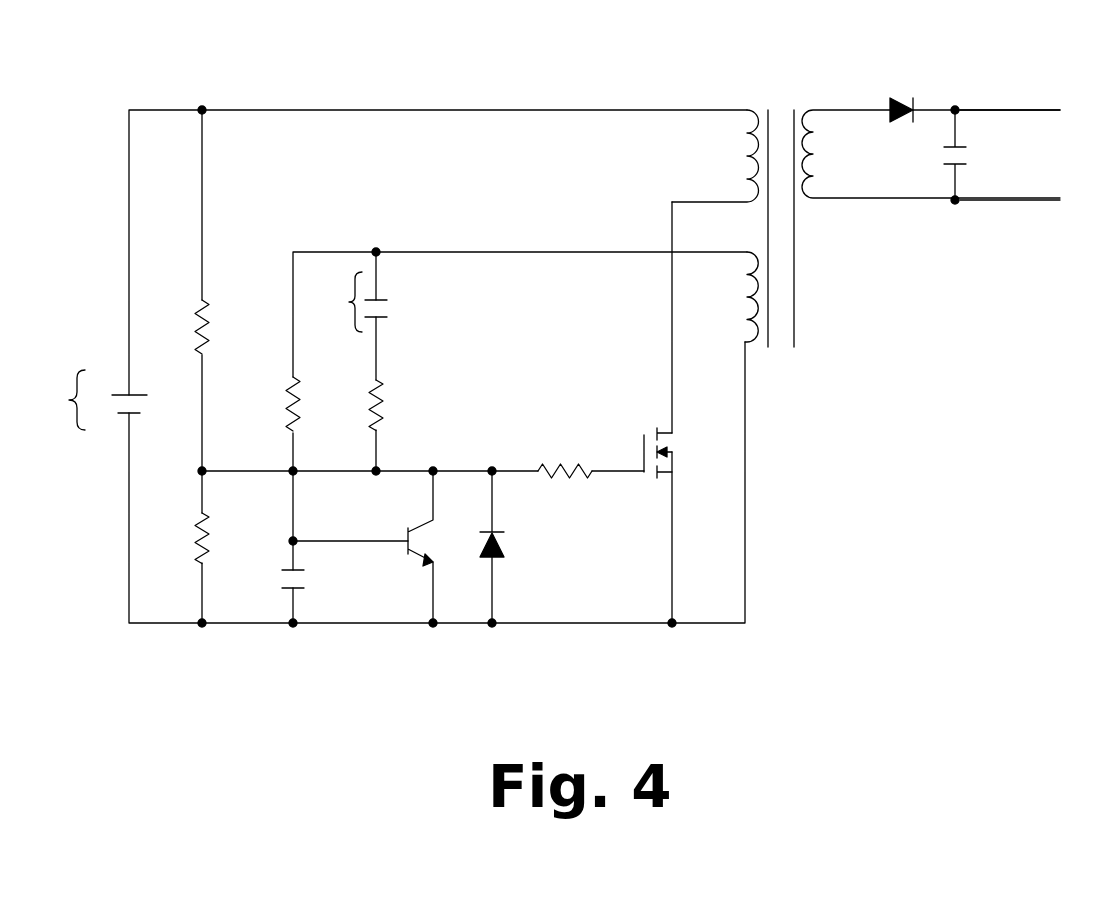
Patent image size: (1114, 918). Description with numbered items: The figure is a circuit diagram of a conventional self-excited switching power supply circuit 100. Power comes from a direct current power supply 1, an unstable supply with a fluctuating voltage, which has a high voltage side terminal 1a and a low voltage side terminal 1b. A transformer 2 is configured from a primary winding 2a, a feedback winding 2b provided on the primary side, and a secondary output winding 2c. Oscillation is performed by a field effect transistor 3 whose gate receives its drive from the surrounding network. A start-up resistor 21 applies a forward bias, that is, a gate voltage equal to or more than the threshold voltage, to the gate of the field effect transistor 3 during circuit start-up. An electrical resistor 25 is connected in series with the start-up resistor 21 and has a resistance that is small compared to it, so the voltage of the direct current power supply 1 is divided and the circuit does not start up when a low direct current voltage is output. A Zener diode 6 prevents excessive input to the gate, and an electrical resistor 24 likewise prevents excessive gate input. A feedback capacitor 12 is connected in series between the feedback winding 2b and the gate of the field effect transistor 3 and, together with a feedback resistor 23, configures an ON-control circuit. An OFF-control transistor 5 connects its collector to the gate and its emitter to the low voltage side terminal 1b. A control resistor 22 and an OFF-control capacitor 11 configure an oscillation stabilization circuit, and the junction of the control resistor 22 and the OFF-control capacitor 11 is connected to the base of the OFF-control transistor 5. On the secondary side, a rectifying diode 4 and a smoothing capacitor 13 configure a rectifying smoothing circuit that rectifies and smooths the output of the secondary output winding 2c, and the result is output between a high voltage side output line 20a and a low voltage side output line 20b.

The self-excited switching power supply circuit 100 is at (230, 35).
The direct current power supply 1 is at (64, 400).
The high voltage side terminal 1a is at (119, 395).
The low voltage side terminal 1b is at (122, 413).
The transformer 2 is at (781, 215).
The primary winding 2a is at (715, 156).
The feedback winding 2b is at (732, 298).
The secondary output winding 2c is at (931, 155).
The field effect transistor 3 is at (671, 453).
The rectifying diode 4 is at (975, 93).
The OFF-control transistor 5 is at (430, 547).
The Zener diode 6 is at (503, 547).
The OFF-control capacitor 11 is at (311, 582).
The feedback capacitor 12 is at (394, 308).
The smoothing capacitor 13 is at (973, 155).
The high voltage side output line 20a is at (1022, 109).
The low voltage side output line 20b is at (1008, 205).
The start-up resistor 21 is at (182, 327).
The control resistor 22 is at (312, 404).
The feedback resistor 23 is at (394, 405).
The electrical resistor 24 is at (565, 456).
The electrical resistor 25 is at (180, 538).